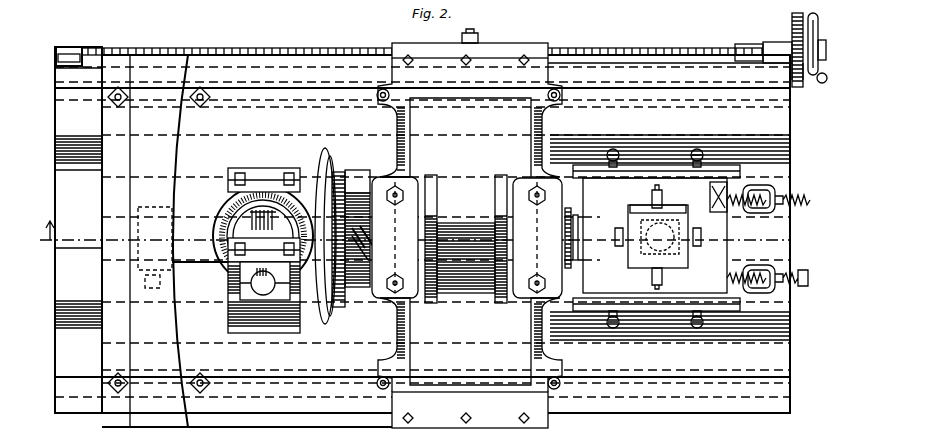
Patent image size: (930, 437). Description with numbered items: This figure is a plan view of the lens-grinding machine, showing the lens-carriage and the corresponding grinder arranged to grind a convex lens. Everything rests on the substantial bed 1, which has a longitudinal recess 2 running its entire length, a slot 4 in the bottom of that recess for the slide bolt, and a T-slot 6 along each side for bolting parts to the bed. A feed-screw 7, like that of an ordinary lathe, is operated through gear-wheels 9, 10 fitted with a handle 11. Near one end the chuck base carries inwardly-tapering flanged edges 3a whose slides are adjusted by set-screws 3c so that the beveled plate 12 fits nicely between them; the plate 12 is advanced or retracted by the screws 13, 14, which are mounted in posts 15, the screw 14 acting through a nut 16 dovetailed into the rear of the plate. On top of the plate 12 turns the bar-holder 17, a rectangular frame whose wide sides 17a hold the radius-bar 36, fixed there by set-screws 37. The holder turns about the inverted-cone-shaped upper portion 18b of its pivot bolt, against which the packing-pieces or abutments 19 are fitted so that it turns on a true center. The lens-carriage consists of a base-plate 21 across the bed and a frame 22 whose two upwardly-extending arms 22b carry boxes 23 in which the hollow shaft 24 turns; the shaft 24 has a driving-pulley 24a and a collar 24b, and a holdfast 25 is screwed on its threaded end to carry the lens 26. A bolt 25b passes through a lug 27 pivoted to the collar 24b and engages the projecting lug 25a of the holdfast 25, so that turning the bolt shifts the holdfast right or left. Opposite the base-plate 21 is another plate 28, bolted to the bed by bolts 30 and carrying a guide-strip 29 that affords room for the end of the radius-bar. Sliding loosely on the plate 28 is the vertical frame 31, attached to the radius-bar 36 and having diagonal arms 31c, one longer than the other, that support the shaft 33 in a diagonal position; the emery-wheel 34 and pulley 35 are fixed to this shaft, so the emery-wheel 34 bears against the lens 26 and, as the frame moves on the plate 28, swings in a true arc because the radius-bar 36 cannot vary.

The bed 1 is at (800, 213).
The longitudinal recess 2 is at (58, 164).
The inwardly-tapering flanged edges 3a is at (604, 304).
The set-screws 3c is at (617, 150).
The slot 4 is at (62, 247).
The longitudinal T-slot 6 is at (58, 95).
The feed-screw 7 is at (118, 47).
The gear-wheel 9 is at (792, 40).
The gear-wheel 10 is at (797, 85).
The handle 11 is at (822, 84).
The plate 12 is at (655, 235).
The screw 13 is at (788, 280).
The screw 14 is at (769, 193).
The posts 15 is at (760, 190).
The nut 16 is at (722, 180).
The bar-holder 17 is at (622, 246).
The wide sides 17a is at (668, 210).
The inverted-cone-shaped upper portion 18b is at (660, 237).
The packing-pieces or abutments 19 is at (684, 214).
The base-plate 21 is at (469, 103).
The frame 22 is at (408, 337).
The arms or supports 22b is at (412, 180).
The boxes 23 is at (467, 237).
The hollow shaft 24 is at (578, 236).
The driving-pulley 24a is at (466, 239).
The collar 24b is at (362, 176).
The holdfast 25 is at (322, 176).
The projecting lug 25a is at (345, 305).
The bolt 25b is at (372, 240).
The lens 26 is at (303, 182).
The lug 27 is at (372, 258).
The plate 28 is at (250, 98).
The guide-strip 29 is at (146, 160).
The bolts 30 is at (118, 104).
The vertical frame 31 is at (264, 297).
The arms 31c is at (272, 163).
The shaft 33 is at (265, 281).
The emery-wheel 34 is at (222, 203).
The pulley 35 is at (245, 232).
The radius-bar 36 is at (612, 218).
The set-screws 37 is at (661, 236).